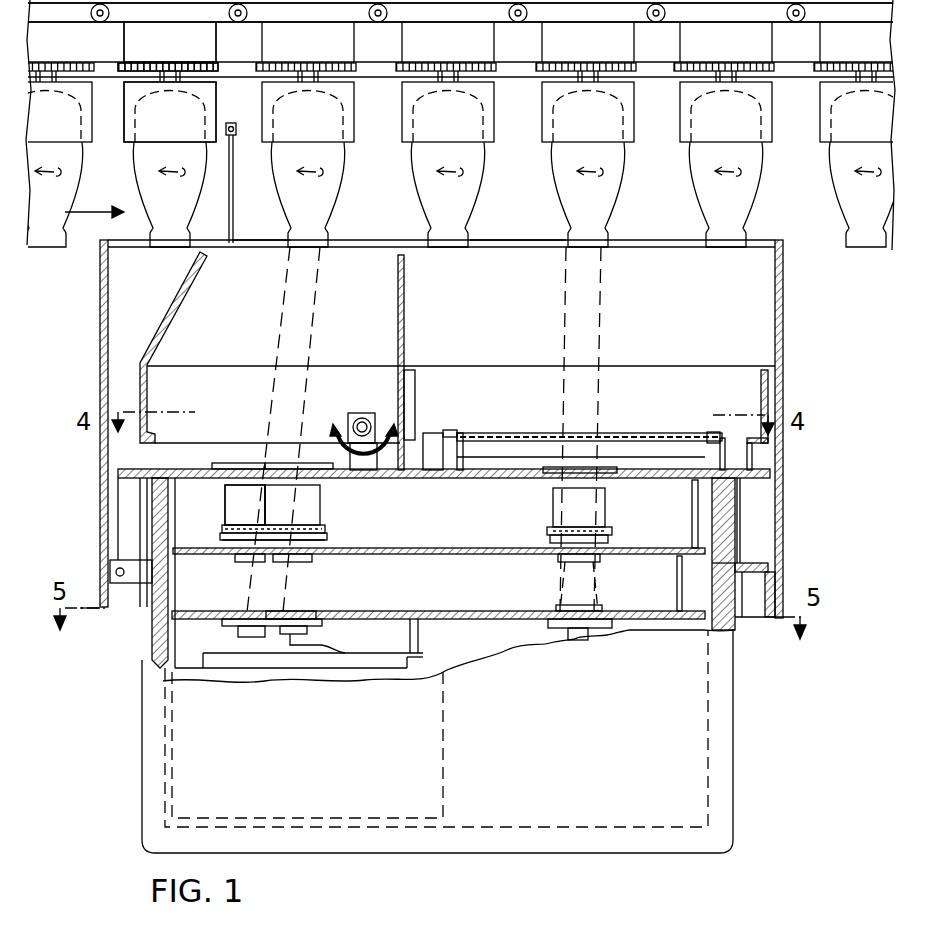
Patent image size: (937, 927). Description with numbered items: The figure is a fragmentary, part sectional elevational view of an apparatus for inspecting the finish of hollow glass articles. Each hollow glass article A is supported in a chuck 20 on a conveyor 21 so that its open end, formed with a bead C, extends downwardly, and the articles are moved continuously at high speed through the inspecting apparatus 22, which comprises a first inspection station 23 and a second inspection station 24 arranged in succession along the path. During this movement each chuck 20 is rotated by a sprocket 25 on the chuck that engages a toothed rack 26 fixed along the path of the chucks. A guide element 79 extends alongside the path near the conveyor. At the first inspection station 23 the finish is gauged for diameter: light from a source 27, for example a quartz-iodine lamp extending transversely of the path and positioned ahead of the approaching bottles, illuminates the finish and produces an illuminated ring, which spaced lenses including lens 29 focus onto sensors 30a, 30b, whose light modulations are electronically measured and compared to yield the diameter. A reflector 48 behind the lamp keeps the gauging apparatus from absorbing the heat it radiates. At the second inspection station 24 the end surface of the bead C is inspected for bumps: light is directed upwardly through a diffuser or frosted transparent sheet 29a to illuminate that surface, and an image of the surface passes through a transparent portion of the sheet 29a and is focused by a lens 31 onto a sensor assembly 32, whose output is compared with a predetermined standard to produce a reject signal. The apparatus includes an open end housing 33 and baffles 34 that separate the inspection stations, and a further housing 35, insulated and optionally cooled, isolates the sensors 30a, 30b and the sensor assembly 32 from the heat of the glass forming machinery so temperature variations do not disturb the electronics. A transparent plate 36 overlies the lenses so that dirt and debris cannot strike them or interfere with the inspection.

The chuck 20 is at (215, 98).
The conveyor 21 is at (222, 14).
The inspecting apparatus 22 is at (96, 318).
The first inspection station 23 is at (346, 234).
The second inspection station 24 is at (526, 236).
The sprocket 25 is at (168, 40).
The toothed rack 26 is at (105, 70).
The light source 27 is at (362, 413).
The lens 29 is at (315, 503).
The diffuser sheet 29a is at (690, 440).
The sensor 30a is at (230, 602).
The sensor 30b is at (327, 610).
The lens 31 is at (604, 510).
The sensor assembly 32 is at (608, 612).
The open end housing 33 is at (784, 474).
The baffle 34 is at (399, 336).
The housing 35 is at (733, 713).
The transparent plate 36 is at (601, 437).
The reflector 48 is at (345, 433).
The guide rod 79 is at (234, 138).
The hollow glass article A is at (188, 204).
The bead C is at (603, 250).